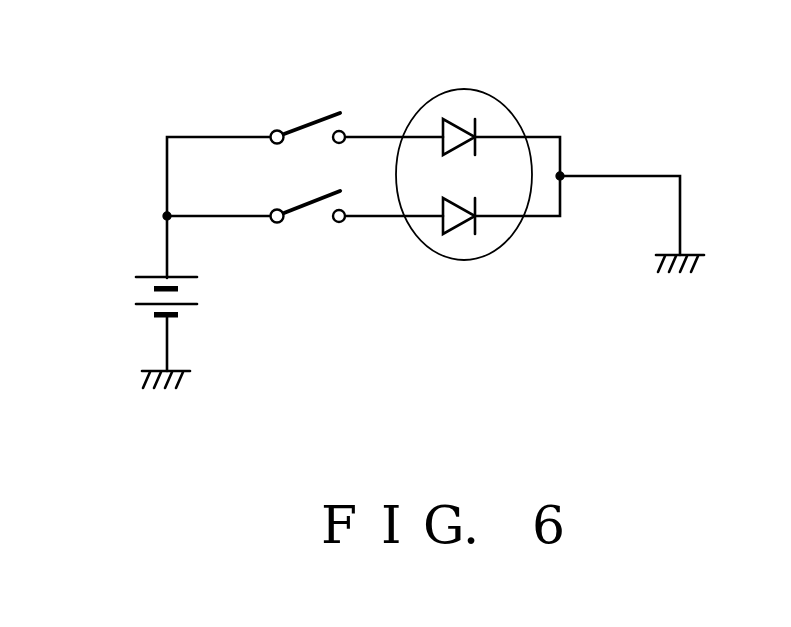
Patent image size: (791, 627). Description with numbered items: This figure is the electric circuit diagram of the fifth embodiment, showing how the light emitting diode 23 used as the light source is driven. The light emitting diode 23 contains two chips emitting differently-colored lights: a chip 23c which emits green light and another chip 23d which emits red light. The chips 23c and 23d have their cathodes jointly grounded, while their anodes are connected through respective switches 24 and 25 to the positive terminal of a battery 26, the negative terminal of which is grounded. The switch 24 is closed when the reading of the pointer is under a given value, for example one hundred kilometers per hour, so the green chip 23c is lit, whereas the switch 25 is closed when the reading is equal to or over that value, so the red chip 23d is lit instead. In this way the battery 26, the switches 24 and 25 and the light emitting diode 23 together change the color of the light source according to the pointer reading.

The light emitting diode 23 is at (505, 106).
The chip 23c is at (463, 118).
The chip 23d is at (468, 234).
The switch 24 is at (302, 120).
The switch 25 is at (311, 218).
The battery 26 is at (135, 290).